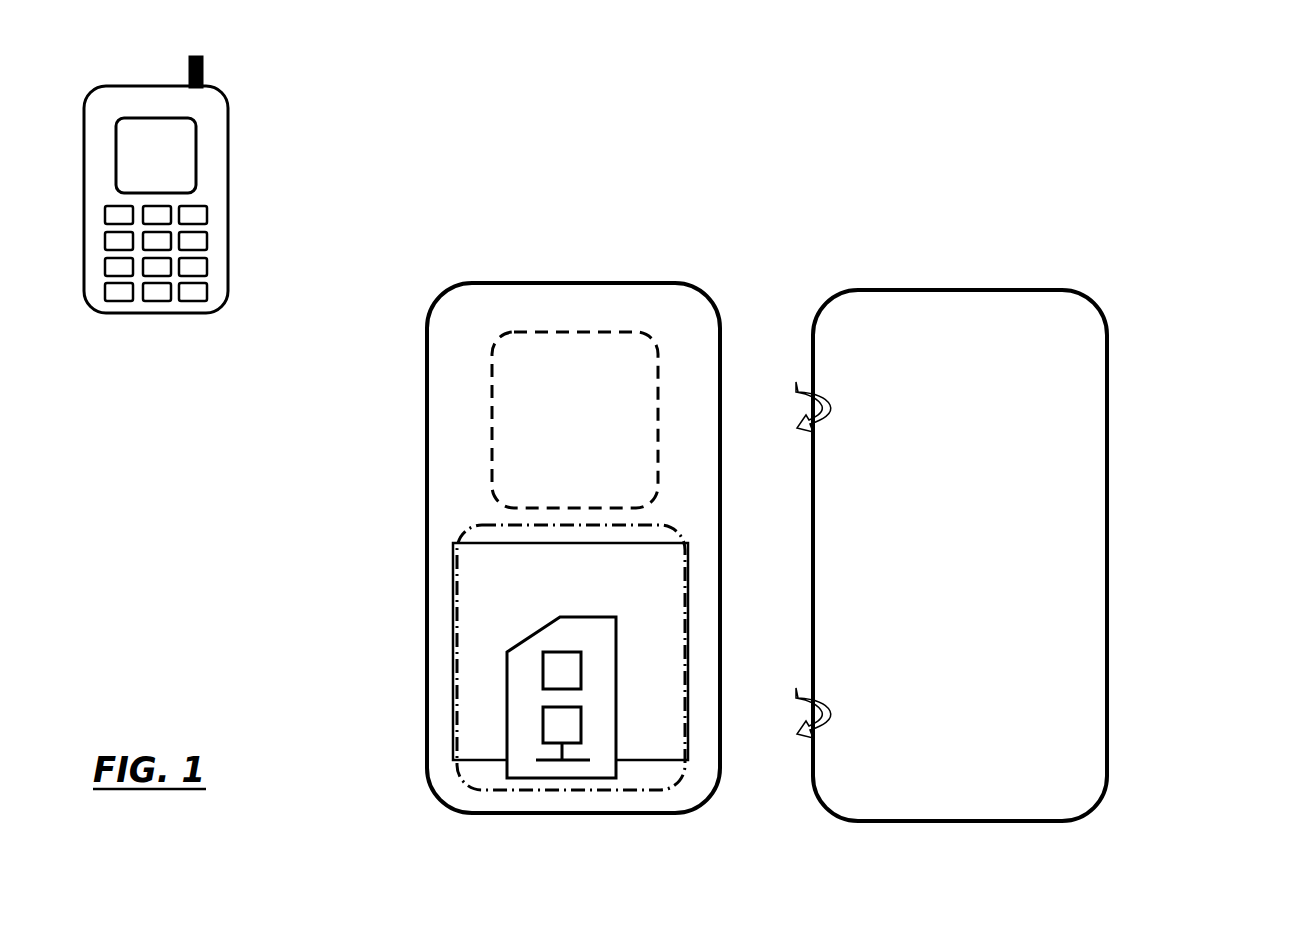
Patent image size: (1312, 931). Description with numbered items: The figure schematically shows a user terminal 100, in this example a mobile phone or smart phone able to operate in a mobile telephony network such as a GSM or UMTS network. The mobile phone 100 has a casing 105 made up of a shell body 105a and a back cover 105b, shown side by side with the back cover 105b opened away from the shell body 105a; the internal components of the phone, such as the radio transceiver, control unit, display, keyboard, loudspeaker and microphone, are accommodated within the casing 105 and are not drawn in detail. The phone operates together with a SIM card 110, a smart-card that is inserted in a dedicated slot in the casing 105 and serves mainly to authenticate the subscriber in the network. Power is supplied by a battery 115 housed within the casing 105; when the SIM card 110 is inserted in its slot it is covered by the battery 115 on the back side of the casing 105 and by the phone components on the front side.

The user terminal 100 is at (230, 163).
The casing 105 is at (819, 482).
The shell body 105a is at (545, 283).
The back cover 105b is at (1107, 475).
The SIM card 110 is at (507, 705).
The battery 115 is at (455, 580).